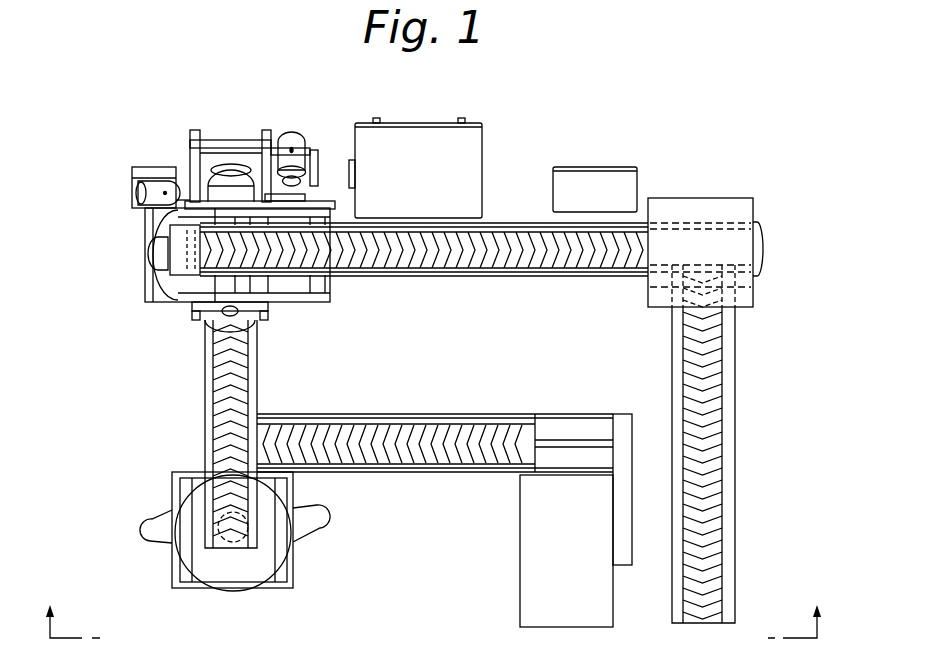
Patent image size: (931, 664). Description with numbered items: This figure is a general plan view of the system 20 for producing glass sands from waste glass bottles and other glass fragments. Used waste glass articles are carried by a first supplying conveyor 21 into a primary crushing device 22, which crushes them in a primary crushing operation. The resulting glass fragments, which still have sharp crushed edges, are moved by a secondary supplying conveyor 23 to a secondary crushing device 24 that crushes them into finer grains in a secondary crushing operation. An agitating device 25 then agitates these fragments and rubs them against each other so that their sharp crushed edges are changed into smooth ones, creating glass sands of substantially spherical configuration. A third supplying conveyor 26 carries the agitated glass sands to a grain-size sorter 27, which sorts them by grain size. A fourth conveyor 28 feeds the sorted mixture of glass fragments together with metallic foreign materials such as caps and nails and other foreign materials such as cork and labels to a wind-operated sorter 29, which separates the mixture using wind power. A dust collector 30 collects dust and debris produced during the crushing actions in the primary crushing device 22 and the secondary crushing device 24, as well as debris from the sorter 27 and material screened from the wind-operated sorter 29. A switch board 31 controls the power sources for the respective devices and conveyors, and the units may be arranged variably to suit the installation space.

The system 20 is at (590, 93).
The first supplying conveyor 21 is at (735, 476).
The primary crushing device 22 is at (755, 300).
The secondary supplying conveyor 23 is at (515, 276).
The secondary crushing device 24 is at (150, 248).
The agitating device 25 is at (200, 320).
The third supplying conveyor 26 is at (258, 385).
The grain-size sorter 27 is at (156, 520).
The fourth conveyor 28 is at (440, 412).
The wind-operated sorter 29 is at (520, 543).
The dust collector 30 is at (485, 172).
The switch board 31 is at (637, 178).